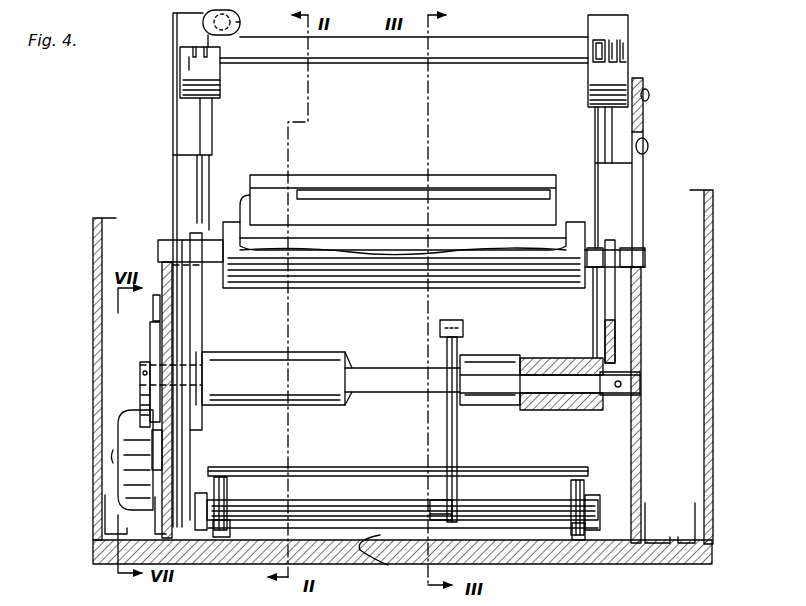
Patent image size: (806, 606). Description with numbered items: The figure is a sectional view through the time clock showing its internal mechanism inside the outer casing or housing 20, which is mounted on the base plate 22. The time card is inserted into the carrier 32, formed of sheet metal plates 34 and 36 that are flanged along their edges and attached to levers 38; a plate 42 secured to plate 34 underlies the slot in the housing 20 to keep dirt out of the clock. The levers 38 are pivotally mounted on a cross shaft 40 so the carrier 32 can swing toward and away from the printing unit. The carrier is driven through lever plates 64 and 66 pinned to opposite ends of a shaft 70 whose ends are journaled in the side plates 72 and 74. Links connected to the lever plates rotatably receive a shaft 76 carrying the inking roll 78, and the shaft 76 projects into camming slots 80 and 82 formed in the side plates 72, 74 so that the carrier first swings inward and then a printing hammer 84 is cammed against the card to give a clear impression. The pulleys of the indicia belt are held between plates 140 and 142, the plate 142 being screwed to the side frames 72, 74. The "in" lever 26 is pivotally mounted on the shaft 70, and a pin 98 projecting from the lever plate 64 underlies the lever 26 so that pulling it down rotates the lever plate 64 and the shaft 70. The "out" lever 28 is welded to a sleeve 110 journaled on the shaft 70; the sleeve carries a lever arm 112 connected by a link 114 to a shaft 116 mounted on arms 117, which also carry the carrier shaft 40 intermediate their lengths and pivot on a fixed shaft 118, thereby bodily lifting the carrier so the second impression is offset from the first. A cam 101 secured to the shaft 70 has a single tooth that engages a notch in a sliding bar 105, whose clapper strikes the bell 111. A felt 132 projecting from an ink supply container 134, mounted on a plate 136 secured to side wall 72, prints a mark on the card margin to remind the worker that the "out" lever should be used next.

The housing 20 is at (93, 428).
The base plate 22 is at (712, 562).
The "in" lever 26 is at (212, 132).
The "out" lever 28 is at (596, 340).
The carrier 32 is at (568, 122).
The sheet metal plate 34 is at (462, 120).
The sheet metal plate 36 is at (500, 44).
The levers 38 is at (232, 533).
The cross shaft 40 is at (345, 505).
The plate 42 is at (392, 68).
The lever plate 64 is at (202, 304).
The lever plate 66 is at (618, 312).
The shaft 70 is at (140, 385).
The side plate 72 is at (162, 268).
The side plate 74 is at (641, 292).
The shaft 76 is at (636, 248).
The inking roll 78 is at (566, 222).
The camming slot 80 is at (165, 240).
The camming slot 82 is at (648, 152).
The printing hammer 84 is at (492, 178).
The pin 98 is at (205, 355).
The cam 101 is at (150, 348).
The bar 105 is at (153, 310).
The sleeve 110 is at (490, 352).
The bell 111 is at (118, 484).
The lever arm 112 is at (458, 412).
The link 114 is at (457, 450).
The shaft 116 is at (432, 504).
The arms 117 is at (205, 485).
The fixed shaft 118 is at (392, 565).
The felt 132 is at (240, 26).
The ink supply container 134 is at (203, 28).
The plate 136 is at (180, 52).
The plate 140 is at (240, 195).
The plate 142 is at (305, 193).